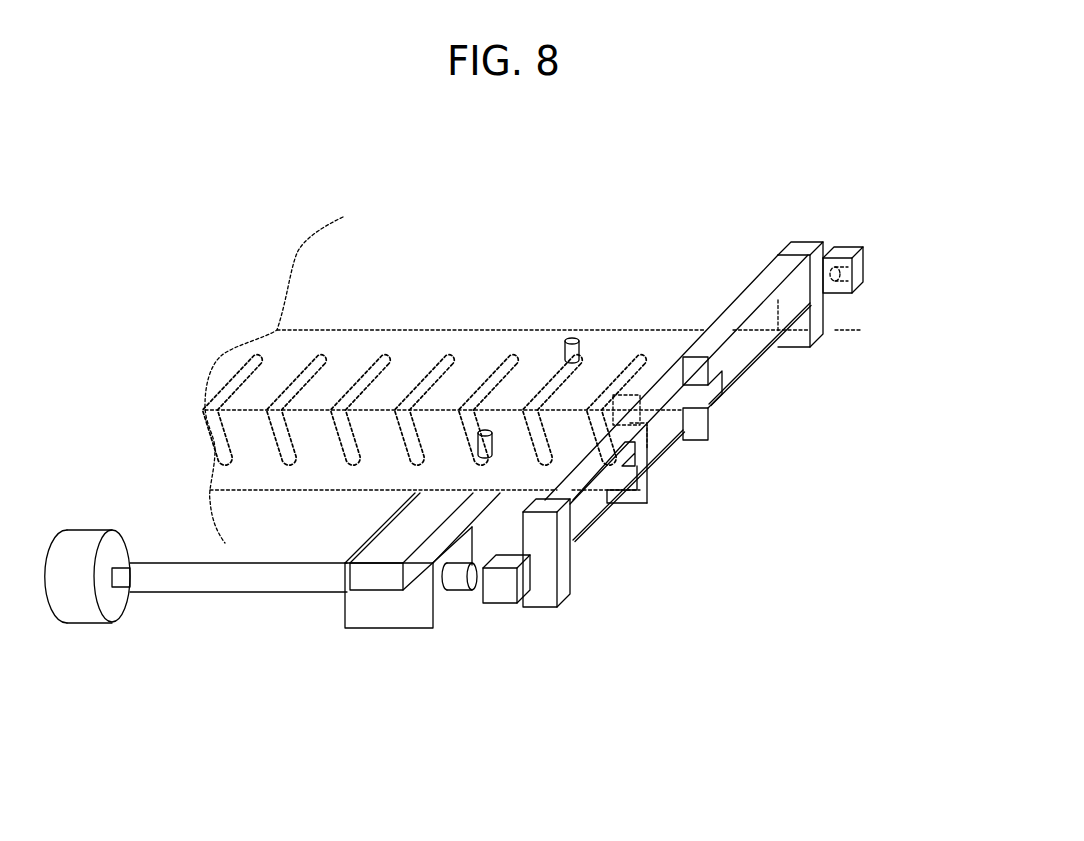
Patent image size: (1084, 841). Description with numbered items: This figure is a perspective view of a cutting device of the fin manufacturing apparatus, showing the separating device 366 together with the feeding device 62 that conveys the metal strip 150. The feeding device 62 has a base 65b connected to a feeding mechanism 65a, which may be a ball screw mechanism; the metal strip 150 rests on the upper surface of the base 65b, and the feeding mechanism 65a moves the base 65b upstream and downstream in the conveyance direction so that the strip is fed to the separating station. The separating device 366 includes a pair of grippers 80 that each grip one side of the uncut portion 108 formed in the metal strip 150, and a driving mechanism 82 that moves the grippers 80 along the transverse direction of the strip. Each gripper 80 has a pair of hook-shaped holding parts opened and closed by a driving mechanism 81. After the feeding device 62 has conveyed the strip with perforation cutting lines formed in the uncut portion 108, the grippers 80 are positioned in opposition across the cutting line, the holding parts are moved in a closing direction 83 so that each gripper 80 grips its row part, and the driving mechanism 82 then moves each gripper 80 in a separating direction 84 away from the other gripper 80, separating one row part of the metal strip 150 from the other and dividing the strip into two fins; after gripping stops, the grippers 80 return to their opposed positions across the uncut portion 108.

The metal strip 150 is at (415, 343).
The uncut portion 108 is at (665, 407).
The gripper 80 is at (770, 383).
The driving mechanism 81 is at (823, 350).
The driving mechanism 82 is at (867, 262).
The separating direction 84 is at (850, 303).
The closing direction 83 is at (635, 413).
The separating device 366 is at (688, 480).
The feeding device 62 is at (377, 640).
The base 65b is at (443, 613).
The feeding mechanism 65a is at (75, 548).